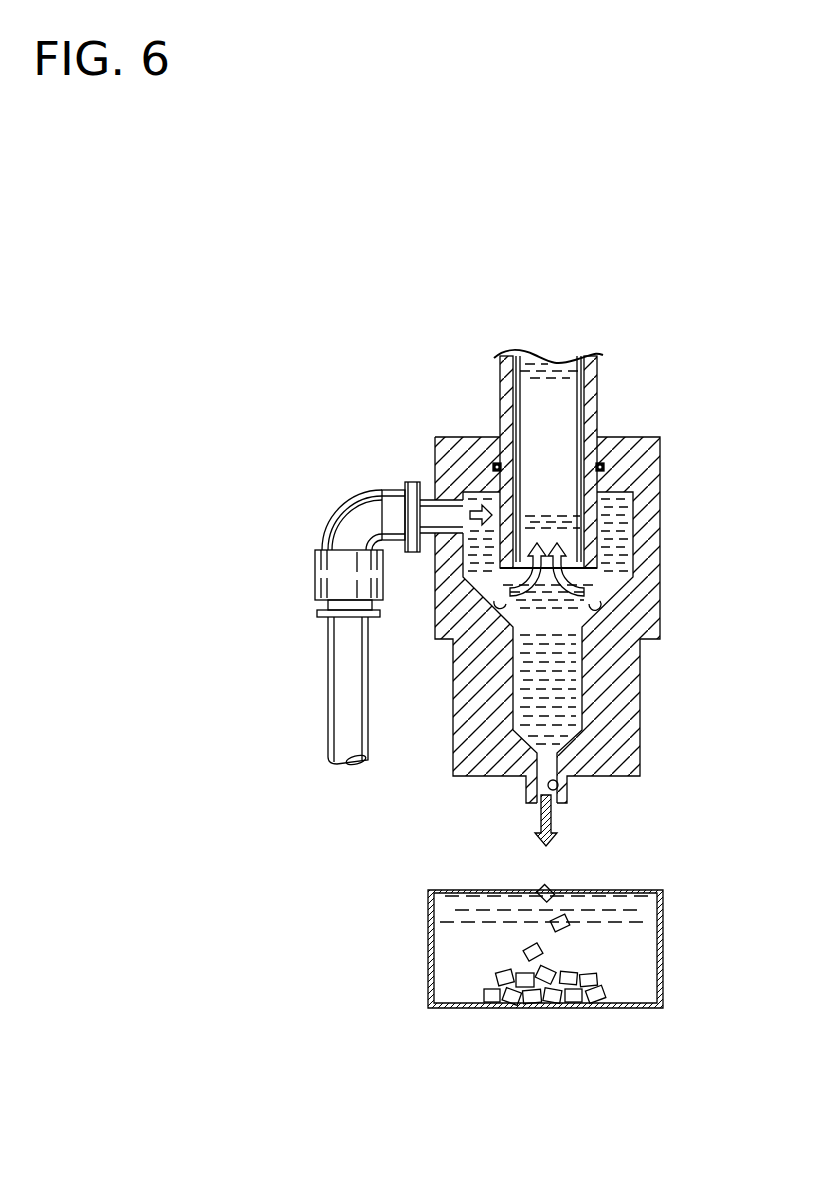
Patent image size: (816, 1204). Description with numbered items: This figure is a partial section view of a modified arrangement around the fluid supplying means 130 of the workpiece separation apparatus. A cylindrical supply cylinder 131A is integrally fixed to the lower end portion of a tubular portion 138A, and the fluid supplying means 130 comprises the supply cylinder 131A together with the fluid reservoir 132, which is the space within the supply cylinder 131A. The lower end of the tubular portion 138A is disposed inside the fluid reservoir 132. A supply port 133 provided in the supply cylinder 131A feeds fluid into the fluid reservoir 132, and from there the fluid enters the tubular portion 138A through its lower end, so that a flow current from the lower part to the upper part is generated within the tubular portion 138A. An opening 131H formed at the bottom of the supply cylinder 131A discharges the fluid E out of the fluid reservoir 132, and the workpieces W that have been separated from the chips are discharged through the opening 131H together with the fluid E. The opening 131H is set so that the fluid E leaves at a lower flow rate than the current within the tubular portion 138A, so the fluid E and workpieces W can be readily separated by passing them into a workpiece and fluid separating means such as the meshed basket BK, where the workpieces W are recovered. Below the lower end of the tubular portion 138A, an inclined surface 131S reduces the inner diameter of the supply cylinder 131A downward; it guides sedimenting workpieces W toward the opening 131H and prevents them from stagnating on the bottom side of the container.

The fluid supplying means 130 is at (257, 448).
The supply cylinder 131A is at (462, 458).
The supply port 133 is at (458, 507).
The fluid reservoir 132 is at (462, 577).
The tubular portion 138A is at (597, 403).
The inclined surface 131S is at (498, 606).
The opening 131H is at (558, 787).
The fluid E is at (540, 813).
The workpieces W is at (540, 885).
The basket BK is at (663, 950).